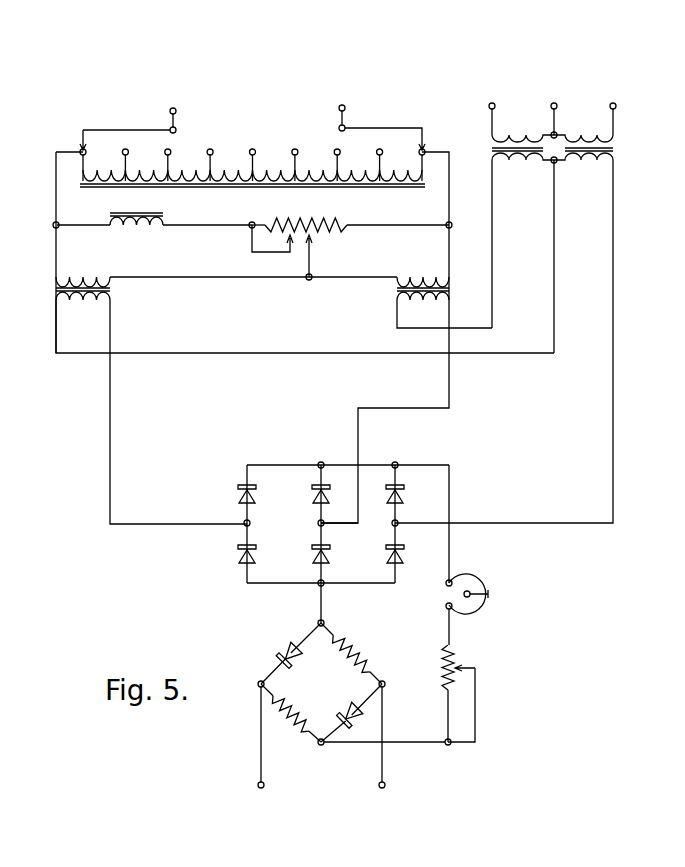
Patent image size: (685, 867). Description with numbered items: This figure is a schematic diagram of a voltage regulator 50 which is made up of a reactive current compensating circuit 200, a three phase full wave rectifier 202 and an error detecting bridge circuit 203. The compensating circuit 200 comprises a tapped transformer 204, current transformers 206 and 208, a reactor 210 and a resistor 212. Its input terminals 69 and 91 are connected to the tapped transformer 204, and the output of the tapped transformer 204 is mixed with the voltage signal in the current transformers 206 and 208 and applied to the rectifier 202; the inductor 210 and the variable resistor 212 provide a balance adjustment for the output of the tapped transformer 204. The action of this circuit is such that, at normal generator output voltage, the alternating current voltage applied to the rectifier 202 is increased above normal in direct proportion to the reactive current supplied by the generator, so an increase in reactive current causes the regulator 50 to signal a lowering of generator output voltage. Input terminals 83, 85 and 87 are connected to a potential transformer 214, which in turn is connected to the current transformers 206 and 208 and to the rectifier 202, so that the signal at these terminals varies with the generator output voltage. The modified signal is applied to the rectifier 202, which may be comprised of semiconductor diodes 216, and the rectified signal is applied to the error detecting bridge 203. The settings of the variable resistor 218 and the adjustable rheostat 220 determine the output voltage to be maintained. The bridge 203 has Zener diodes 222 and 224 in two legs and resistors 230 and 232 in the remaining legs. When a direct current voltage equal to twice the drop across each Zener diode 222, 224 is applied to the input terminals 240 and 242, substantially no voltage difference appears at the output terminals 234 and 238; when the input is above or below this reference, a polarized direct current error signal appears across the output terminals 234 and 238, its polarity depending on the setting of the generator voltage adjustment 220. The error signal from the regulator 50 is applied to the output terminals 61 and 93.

The voltage regulator 50 is at (73, 424).
The output terminal 61 is at (259, 788).
The input terminal 69 is at (176, 110).
The input terminal 83 is at (490, 107).
The input terminal 85 is at (552, 107).
The input terminal 87 is at (611, 107).
The input terminal 91 is at (339, 107).
The output terminal 93 is at (385, 788).
The reactive current compensating circuit 200 is at (252, 282).
The three phase full wave rectifier 202 is at (343, 512).
The error detecting bridge circuit 203 is at (316, 687).
The tapped transformer 204 is at (274, 207).
The current transformer 206 is at (108, 269).
The current transformer 208 is at (435, 264).
The reactor 210 is at (158, 211).
The resistor 212 is at (305, 219).
The potential transformer 214 is at (664, 155).
The semiconductor diodes 216 is at (251, 543).
The variable resistor 218 is at (455, 665).
The adjustable rheostat 220 is at (486, 582).
The Zener diode 222 is at (282, 649).
The Zener diode 224 is at (362, 714).
The resistor 230 is at (290, 722).
The resistor 232 is at (356, 654).
The output terminal 234 is at (259, 685).
The output terminal 238 is at (398, 679).
The input terminal 240 is at (331, 613).
The input terminal 242 is at (322, 755).